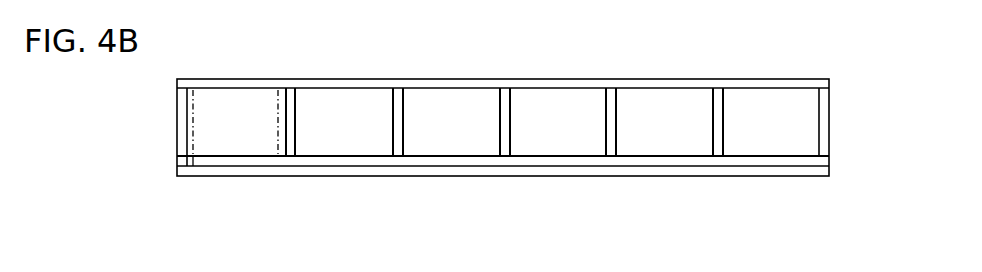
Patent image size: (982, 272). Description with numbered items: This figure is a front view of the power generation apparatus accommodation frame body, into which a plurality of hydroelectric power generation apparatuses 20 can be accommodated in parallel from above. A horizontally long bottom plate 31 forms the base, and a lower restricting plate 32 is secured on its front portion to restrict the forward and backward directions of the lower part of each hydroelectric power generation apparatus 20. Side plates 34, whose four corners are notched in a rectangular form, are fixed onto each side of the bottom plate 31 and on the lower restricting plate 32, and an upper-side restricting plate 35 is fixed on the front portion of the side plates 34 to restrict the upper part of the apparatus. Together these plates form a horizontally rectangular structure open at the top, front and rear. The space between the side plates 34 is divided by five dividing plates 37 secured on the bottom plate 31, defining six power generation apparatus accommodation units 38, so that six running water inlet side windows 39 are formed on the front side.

The hydroelectric power generation apparatus 20 is at (233, 111).
The bottom plate 31 is at (550, 170).
The lower restricting plate 32 is at (440, 162).
The side plate 34 is at (183, 126).
The upper-side restricting plate 35 is at (460, 86).
The dividing plate 37 is at (392, 113).
The power generation apparatus accommodation unit 38 is at (335, 142).
The running water inlet side window 39 is at (220, 138).